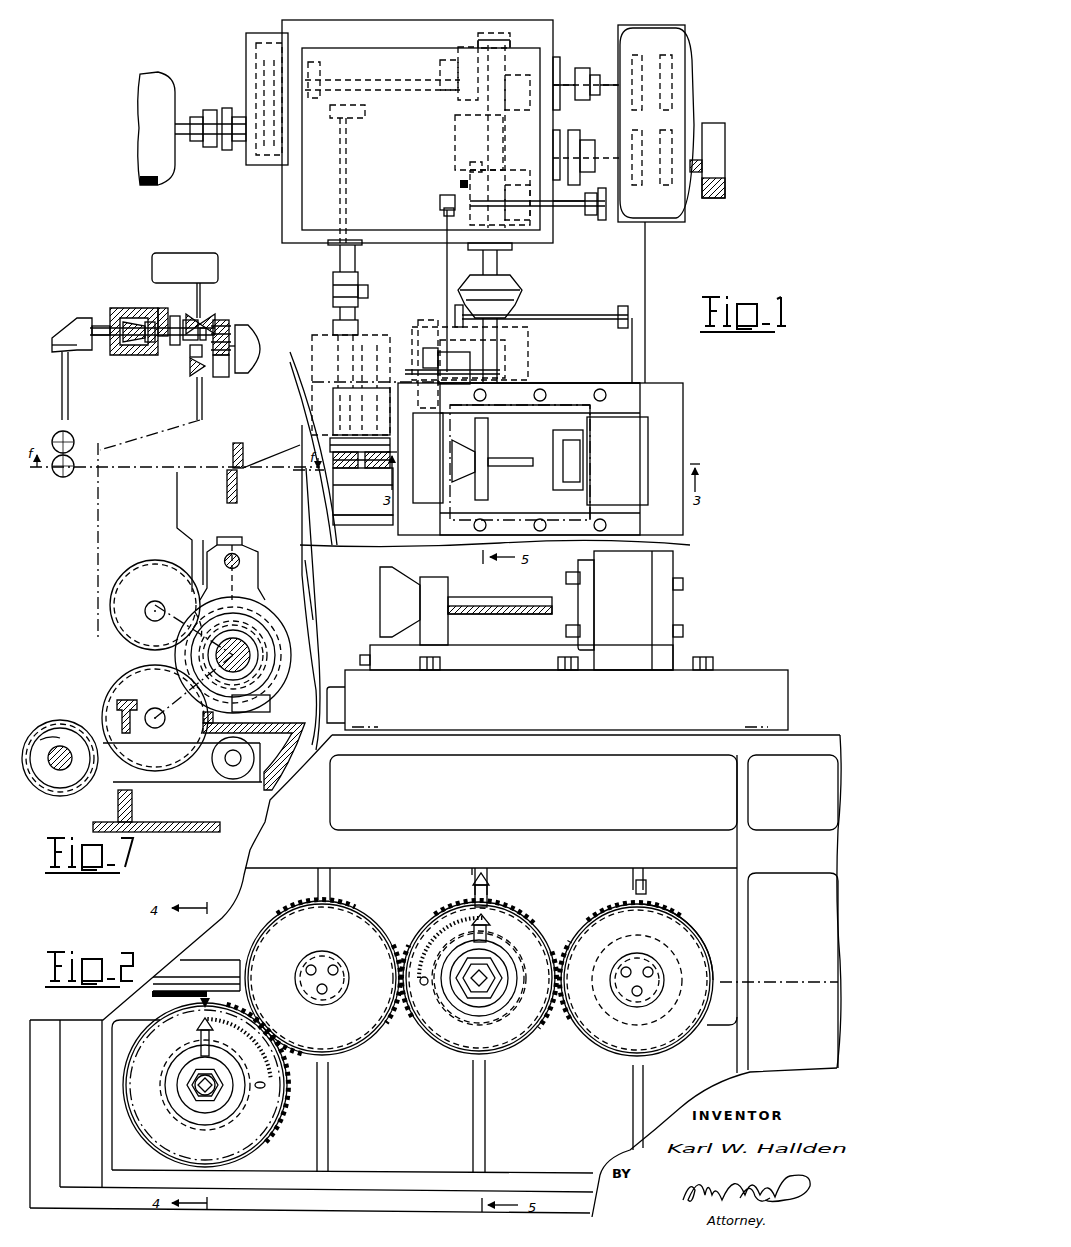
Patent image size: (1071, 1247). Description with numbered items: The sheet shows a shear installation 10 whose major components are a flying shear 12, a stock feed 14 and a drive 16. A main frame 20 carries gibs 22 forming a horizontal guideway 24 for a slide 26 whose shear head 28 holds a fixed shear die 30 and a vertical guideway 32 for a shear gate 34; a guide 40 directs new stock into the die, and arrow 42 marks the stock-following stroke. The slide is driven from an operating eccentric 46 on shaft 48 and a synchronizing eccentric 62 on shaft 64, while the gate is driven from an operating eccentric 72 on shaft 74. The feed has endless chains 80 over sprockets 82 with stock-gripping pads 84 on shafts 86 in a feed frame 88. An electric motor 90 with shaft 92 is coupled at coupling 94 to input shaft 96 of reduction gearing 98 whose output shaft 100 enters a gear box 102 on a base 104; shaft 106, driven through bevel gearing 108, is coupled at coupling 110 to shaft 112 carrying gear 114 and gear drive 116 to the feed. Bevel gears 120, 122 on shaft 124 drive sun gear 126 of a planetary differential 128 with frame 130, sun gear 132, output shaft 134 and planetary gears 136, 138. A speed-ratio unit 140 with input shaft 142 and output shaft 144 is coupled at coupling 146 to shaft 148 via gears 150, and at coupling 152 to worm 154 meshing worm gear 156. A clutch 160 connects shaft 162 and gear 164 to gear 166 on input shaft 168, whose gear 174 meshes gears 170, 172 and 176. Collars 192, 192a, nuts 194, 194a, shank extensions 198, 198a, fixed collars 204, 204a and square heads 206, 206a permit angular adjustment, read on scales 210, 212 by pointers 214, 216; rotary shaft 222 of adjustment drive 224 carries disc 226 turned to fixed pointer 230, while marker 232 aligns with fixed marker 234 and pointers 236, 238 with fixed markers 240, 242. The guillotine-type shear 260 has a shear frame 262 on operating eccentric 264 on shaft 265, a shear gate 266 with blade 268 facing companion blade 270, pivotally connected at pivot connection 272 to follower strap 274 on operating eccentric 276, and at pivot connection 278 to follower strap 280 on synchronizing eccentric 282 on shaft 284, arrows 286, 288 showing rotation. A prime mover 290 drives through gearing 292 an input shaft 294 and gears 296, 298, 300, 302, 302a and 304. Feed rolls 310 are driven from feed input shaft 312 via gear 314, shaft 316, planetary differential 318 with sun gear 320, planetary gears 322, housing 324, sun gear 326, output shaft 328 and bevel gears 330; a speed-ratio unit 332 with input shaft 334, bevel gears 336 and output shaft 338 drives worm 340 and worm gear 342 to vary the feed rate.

In FIG. 1, the shear installation 10 is at (713, 258).
In FIG. 1, the flying shear 12 is at (688, 405).
In FIG. 1, the stock feed 14 is at (350, 515).
In FIG. 1, the drive 16 is at (585, 35).
In FIG. 1, the main frame 20 is at (670, 462).
In FIG. 2, the main frame 20 is at (808, 738).
In FIG. 1, the gibs 22 is at (570, 382).
In FIG. 2, the gibs 22 is at (752, 676).
In FIG. 1, the horizontal guideway 24 is at (600, 383).
In FIG. 1, the slide 26 is at (510, 430).
In FIG. 2, the slide 26 is at (503, 648).
In FIG. 1, the shear head 28 is at (553, 438).
In FIG. 2, the shear head 28 is at (640, 578).
In FIG. 2, the fixed shear die 30 is at (580, 598).
In FIG. 1, the vertical guideway 32 is at (560, 463).
In FIG. 1, the shear gate 34 is at (583, 470).
In FIG. 1, the guide 40 is at (500, 468).
In FIG. 2, the guide 40 is at (480, 605).
In FIG. 1, the arrow 42 is at (628, 452).
In FIG. 2, the operating eccentric 46 is at (548, 922).
In FIG. 2, the transverse shaft 48 is at (470, 1005).
In FIG. 2, the synchronizing eccentric 62 is at (160, 1140).
In FIG. 2, the transverse shaft 64 is at (178, 1086).
In FIG. 2, the operating eccentric 72 is at (675, 930).
In FIG. 2, the transverse shaft 74 is at (630, 1010).
In FIG. 1, the endless chains 80 is at (378, 525).
In FIG. 1, the sprockets 82 is at (362, 470).
In FIG. 1, the stock-gripping pads 84 is at (345, 470).
In FIG. 1, the shafts 86 is at (362, 425).
In FIG. 1, the feed frame 88 is at (325, 376).
In FIG. 1, the electric motor 90 is at (152, 80).
In FIG. 1, the motor shaft 92 is at (200, 122).
In FIG. 1, the coupling 94 is at (210, 147).
In FIG. 1, the input shaft 96 is at (228, 150).
In FIG. 1, the reduction gearing 98 is at (258, 36).
In FIG. 1, the output shaft 100 is at (338, 80).
In FIG. 1, the gear box 102 is at (432, 50).
In FIG. 1, the base 104 is at (282, 243).
In FIG. 1, the shaft 106 is at (352, 188).
In FIG. 1, the bevel gearing 108 is at (332, 116).
In FIG. 1, the coupling 110 is at (333, 290).
In FIG. 1, the shaft 112 is at (333, 330).
In FIG. 1, the gear 114 is at (310, 390).
In FIG. 1, the gear drive 116 is at (370, 388).
In FIG. 1, the bevel gear 120 is at (488, 118).
In FIG. 1, the bevel gear 122 is at (495, 48).
In FIG. 1, the shaft 124 is at (515, 110).
In FIG. 1, the sun gear 126 is at (468, 168).
In FIG. 1, the planetary differential 128 is at (458, 184).
In FIG. 1, the frame 130 is at (444, 215).
In FIG. 1, the sun gear 132 is at (522, 218).
In FIG. 1, the output shaft 134 is at (512, 247).
In FIG. 1, the planetary gears 136 is at (438, 200).
In FIG. 1, the planetary gears 138 is at (585, 198).
In FIG. 1, the speed-ratio unit 140 is at (697, 72).
In FIG. 1, the input shaft 142 is at (598, 74).
In FIG. 1, the output shaft 144 is at (590, 140).
In FIG. 1, the coupling 146 is at (582, 68).
In FIG. 1, the shaft 148 is at (480, 72).
In FIG. 1, the pair of gears 150 is at (447, 95).
In FIG. 1, the coupling 152 is at (574, 130).
In FIG. 1, the worm 154 is at (520, 170).
In FIG. 1, the worm gear 156 is at (462, 128).
In FIG. 1, the clutch 160 is at (524, 285).
In FIG. 1, the shaft 162 is at (515, 342).
In FIG. 1, the gear 164 is at (520, 352).
In FIG. 1, the gear 166 is at (412, 345).
In FIG. 1, the input shaft 168 is at (430, 414).
In FIG. 2, the input shaft 168 is at (340, 955).
In FIG. 2, the gear 170 is at (498, 912).
In FIG. 2, the gear 172 is at (614, 906).
In FIG. 2, the gear 174 is at (340, 906).
In FIG. 2, the gear 176 is at (172, 1022).
In FIG. 2, the collar 192 is at (503, 1000).
In FIG. 2, the collar 192a is at (218, 1124).
In FIG. 2, the nuts 194 is at (483, 1000).
In FIG. 2, the nuts 194a is at (190, 1122).
In FIG. 2, the shank extension 198 is at (500, 986).
In FIG. 2, the shank extension 198a is at (195, 1075).
In FIG. 2, the fixed collar 204 is at (465, 985).
In FIG. 2, the fixed collar 204a is at (180, 1094).
In FIG. 2, the square head 206 is at (500, 976).
In FIG. 2, the square head 206a is at (222, 1092).
In FIG. 2, the scale 210 is at (438, 918).
In FIG. 2, the scale 212 is at (265, 1084).
In FIG. 2, the pointer 214 is at (492, 938).
In FIG. 2, the pointer 216 is at (210, 1043).
In FIG. 1, the rotary shaft 222 is at (447, 262).
In FIG. 1, the adjustment drive 224 is at (570, 212).
In FIG. 1, the disc 226 is at (460, 380).
In FIG. 1, the fixed pointer 230 is at (437, 365).
In FIG. 2, the marker 232 is at (645, 928).
In FIG. 2, the fixed marker 234 is at (646, 890).
In FIG. 2, the pointer 236 is at (488, 895).
In FIG. 2, the pointer 238 is at (205, 1000).
In FIG. 2, the fixed marker 240 is at (462, 870).
In FIG. 2, the fixed marker 242 is at (226, 977).
In FIG. 7, the guillotine-type shear 260 is at (142, 522).
In FIG. 7, the shear frame 262 is at (316, 578).
In FIG. 7, the operating eccentric 264 is at (262, 685).
In FIG. 7, the shaft 265 is at (246, 665).
In FIG. 7, the shear gate 266 is at (182, 500).
In FIG. 7, the blade 268 is at (230, 498).
In FIG. 7, the companion blade 270 is at (233, 454).
In FIG. 7, the pivot connection 272 is at (241, 561).
In FIG. 7, the follower strap 274 is at (243, 592).
In FIG. 7, the operating eccentric 276 is at (248, 620).
In FIG. 7, the pivot connection 278 is at (233, 768).
In FIG. 7, the follower strap 280 is at (158, 787).
In FIG. 7, the synchronizing eccentric 282 is at (60, 728).
In FIG. 7, the shaft 284 is at (63, 765).
In FIG. 7, the arrow 286 is at (48, 752).
In FIG. 7, the arrow 288 is at (232, 720).
In FIG. 1, the prime mover 290 is at (250, 328).
In FIG. 1, the gearing 292 is at (213, 358).
In FIG. 1, the input shaft 294 is at (197, 405).
In FIG. 7, the input shaft 294 is at (157, 708).
In FIG. 7, the gear 296 is at (148, 725).
In FIG. 7, the gear 298 is at (106, 790).
In FIG. 7, the gear 300 is at (158, 602).
In FIG. 7, the gear 302 is at (142, 565).
In FIG. 7, the gear 302a is at (155, 605).
In FIG. 7, the gear 304 is at (205, 615).
In FIG. 1, the feed rolls 310 is at (74, 446).
In FIG. 1, the feed input shaft 312 is at (68, 402).
In FIG. 1, the gear 314 is at (224, 326).
In FIG. 1, the shaft 316 is at (202, 338).
In FIG. 1, the planetary differential 318 is at (115, 302).
In FIG. 1, the sun gear 320 is at (160, 312).
In FIG. 1, the planetary gears 322 is at (130, 345).
In FIG. 1, the housing 324 is at (152, 346).
In FIG. 1, the sun gear 326 is at (112, 310).
In FIG. 1, the output shaft 328 is at (96, 336).
In FIG. 1, the bevel gears 330 is at (77, 320).
In FIG. 1, the speed-ratio unit 332 is at (190, 254).
In FIG. 1, the input shaft 334 is at (202, 300).
In FIG. 1, the bevel gears 336 is at (192, 316).
In FIG. 1, the output shaft 338 is at (187, 300).
In FIG. 1, the worm 340 is at (192, 362).
In FIG. 1, the worm gear 342 is at (175, 316).